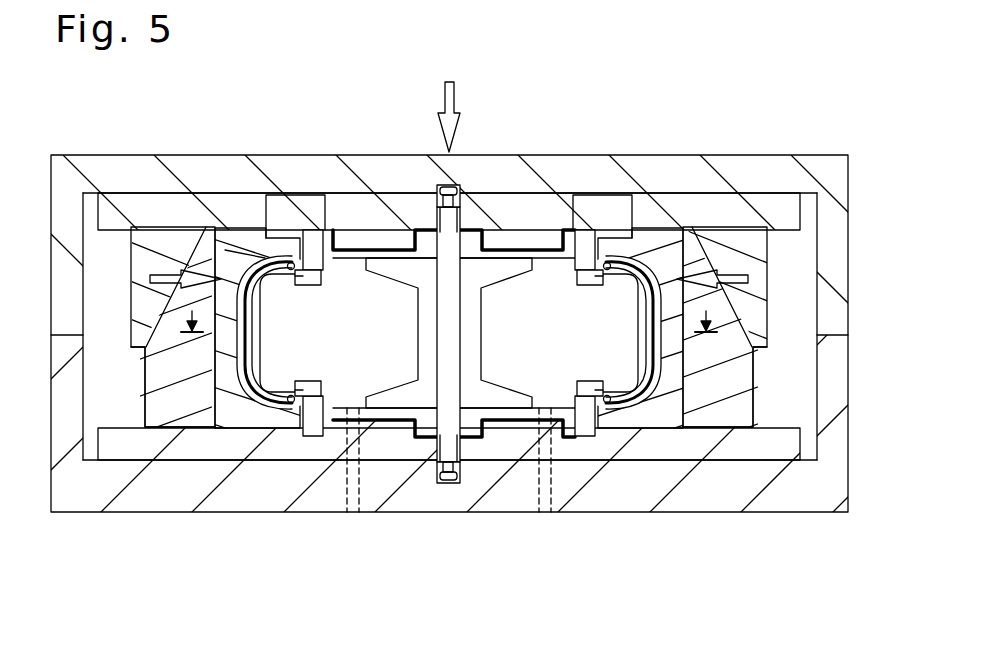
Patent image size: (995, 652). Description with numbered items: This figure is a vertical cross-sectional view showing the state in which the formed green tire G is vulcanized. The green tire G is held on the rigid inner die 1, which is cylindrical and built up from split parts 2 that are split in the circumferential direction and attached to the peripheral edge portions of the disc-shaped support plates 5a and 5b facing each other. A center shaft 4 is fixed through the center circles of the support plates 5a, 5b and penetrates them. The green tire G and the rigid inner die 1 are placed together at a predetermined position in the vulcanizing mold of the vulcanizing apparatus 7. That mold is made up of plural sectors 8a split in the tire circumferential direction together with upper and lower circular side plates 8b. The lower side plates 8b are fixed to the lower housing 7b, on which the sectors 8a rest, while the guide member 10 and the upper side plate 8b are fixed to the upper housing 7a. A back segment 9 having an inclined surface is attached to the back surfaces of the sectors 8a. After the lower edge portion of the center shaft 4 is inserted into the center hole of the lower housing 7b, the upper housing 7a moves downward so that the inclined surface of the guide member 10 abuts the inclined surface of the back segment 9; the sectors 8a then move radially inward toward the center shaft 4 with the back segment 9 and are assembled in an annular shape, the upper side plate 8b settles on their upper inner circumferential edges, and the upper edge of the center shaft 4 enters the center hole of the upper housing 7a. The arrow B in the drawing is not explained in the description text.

The rigid inner die 1 is at (258, 330).
The split parts 2 is at (262, 300).
The center shaft 4 is at (458, 248).
The support plate 5a is at (528, 250).
The support plate 5b is at (397, 412).
The vulcanizing apparatus 7 is at (689, 157).
The upper housing 7a is at (388, 168).
The lower housing 7b is at (494, 503).
The sectors 8a is at (237, 417).
The side plates 8b is at (300, 235).
The back segment 9 is at (168, 408).
The guide member 10 is at (172, 245).
The green tire G is at (232, 262).
The pressing direction B is at (448, 307).